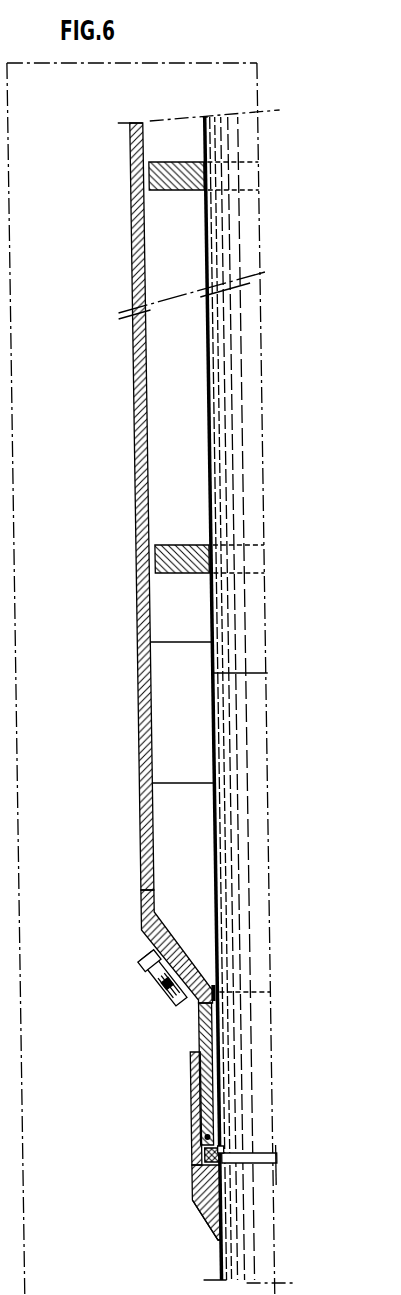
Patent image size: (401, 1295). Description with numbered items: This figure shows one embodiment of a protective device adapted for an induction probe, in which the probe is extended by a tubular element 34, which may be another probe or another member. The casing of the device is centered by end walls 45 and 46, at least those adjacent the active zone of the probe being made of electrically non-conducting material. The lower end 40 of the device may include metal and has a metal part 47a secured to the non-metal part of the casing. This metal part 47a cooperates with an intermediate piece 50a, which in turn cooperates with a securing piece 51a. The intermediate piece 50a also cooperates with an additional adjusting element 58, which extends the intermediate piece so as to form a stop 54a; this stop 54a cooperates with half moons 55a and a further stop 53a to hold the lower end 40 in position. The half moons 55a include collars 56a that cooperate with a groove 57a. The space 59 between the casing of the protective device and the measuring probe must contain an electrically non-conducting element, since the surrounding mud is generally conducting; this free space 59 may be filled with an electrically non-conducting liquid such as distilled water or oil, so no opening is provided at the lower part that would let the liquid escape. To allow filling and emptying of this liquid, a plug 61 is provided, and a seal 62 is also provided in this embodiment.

The tubular element 34 is at (223, 1258).
The lower end 40 is at (135, 1034).
The end wall 45 is at (200, 191).
The end wall 46 is at (188, 546).
The metal part 47a is at (140, 774).
The intermediate piece 50a is at (150, 908).
The securing piece 51a is at (210, 1210).
The stop 53a is at (207, 1183).
The stop 54a is at (207, 1137).
The half moons 55a is at (210, 1157).
The collars 56a is at (222, 1150).
The groove 57a is at (250, 1173).
The adjusting element 58 is at (192, 1080).
The space 59 is at (190, 715).
The plug 61 is at (138, 956).
The seal 62 is at (191, 1012).